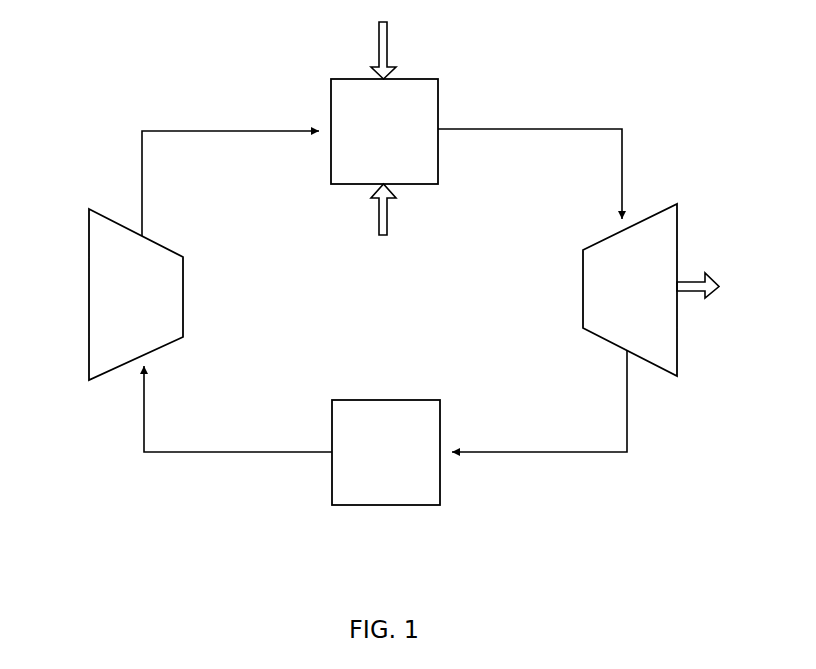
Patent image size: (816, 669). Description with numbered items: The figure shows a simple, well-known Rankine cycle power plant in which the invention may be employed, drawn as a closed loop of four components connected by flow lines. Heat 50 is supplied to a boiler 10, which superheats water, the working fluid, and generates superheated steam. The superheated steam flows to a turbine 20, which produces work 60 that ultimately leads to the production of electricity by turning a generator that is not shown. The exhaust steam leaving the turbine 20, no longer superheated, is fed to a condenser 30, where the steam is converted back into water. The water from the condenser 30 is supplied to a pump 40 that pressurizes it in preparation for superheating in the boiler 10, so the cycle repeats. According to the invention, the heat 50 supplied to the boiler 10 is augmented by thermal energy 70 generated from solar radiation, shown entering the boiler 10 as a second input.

The boiler 10 is at (326, 187).
The turbine 20 is at (681, 380).
The condenser 30 is at (328, 508).
The pump 40 is at (85, 384).
The heat 50 is at (393, 31).
The work 60 is at (699, 277).
The thermal energy generated from solar radiation 70 is at (393, 214).